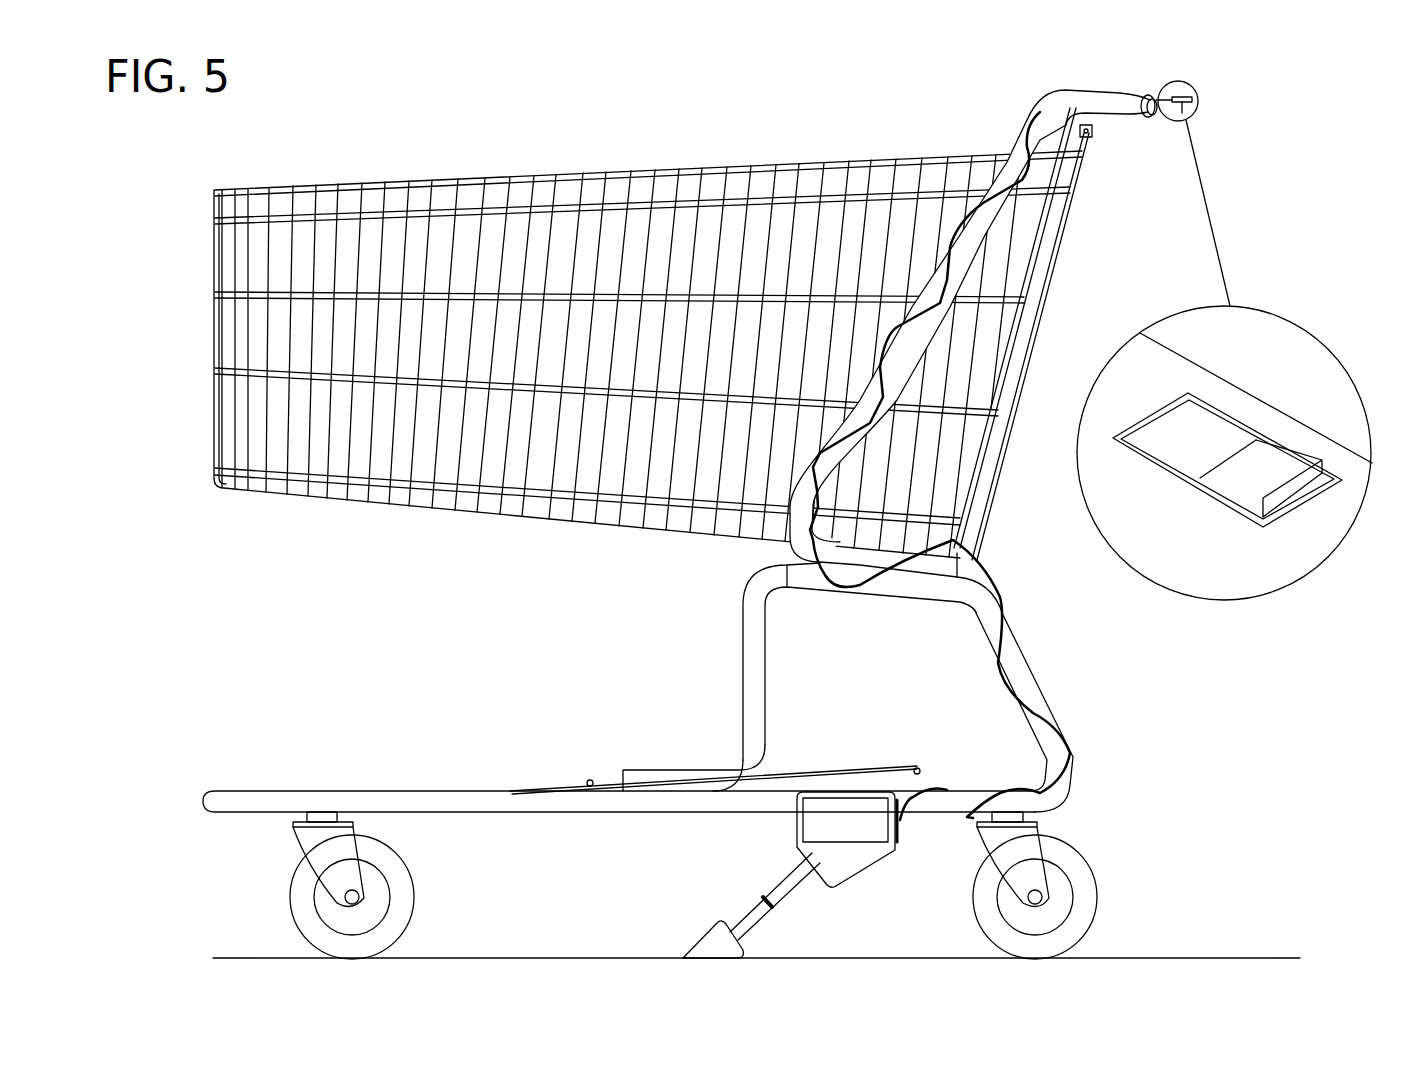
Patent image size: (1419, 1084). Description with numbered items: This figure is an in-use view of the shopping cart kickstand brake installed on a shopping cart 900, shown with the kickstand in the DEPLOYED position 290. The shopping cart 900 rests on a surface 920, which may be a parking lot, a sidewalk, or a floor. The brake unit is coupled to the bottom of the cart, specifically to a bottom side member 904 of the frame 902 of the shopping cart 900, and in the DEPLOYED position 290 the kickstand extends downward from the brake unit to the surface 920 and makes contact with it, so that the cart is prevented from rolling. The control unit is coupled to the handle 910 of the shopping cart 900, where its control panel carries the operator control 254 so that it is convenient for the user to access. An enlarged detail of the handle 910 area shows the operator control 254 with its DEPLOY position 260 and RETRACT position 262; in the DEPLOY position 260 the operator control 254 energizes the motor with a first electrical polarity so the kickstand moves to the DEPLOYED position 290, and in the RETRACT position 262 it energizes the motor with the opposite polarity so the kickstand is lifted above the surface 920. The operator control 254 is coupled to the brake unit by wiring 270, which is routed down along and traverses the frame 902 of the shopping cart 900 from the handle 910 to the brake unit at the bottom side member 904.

The shopping cart 900 is at (558, 175).
The frame 902 is at (743, 702).
The bottom side member 904 is at (513, 812).
The handle 910 is at (1120, 73).
The surface 920 is at (1218, 957).
The DEPLOYED position 290 is at (733, 903).
The wiring 270 is at (1067, 732).
The DEPLOY position 260 is at (1238, 400).
The RETRACT position 262 is at (1303, 436).
The operator control 254 is at (1245, 475).